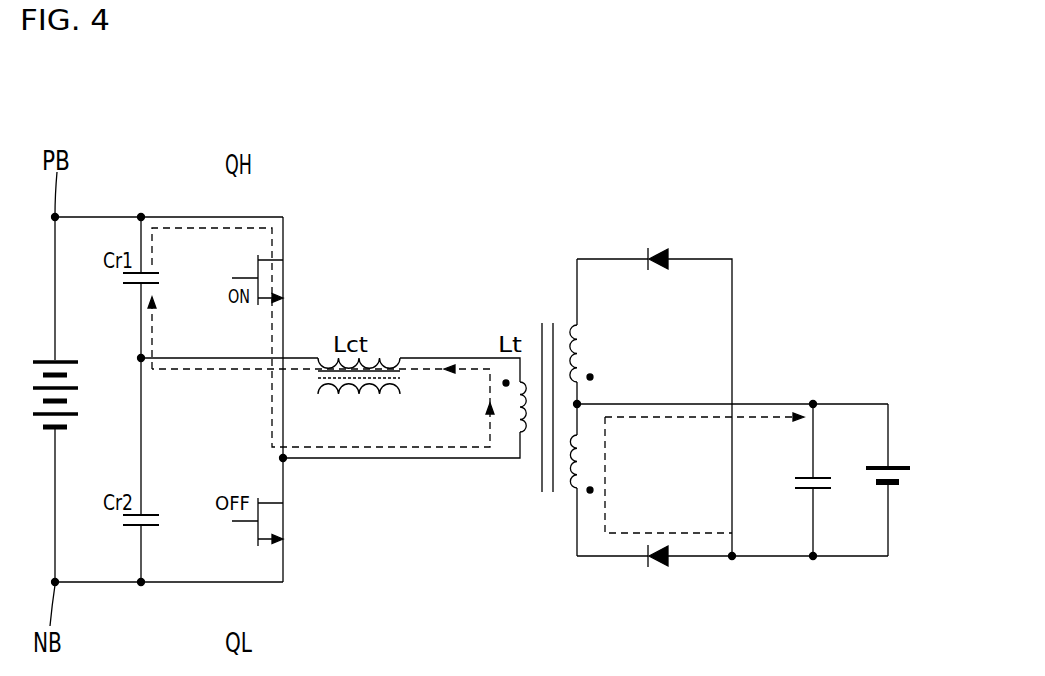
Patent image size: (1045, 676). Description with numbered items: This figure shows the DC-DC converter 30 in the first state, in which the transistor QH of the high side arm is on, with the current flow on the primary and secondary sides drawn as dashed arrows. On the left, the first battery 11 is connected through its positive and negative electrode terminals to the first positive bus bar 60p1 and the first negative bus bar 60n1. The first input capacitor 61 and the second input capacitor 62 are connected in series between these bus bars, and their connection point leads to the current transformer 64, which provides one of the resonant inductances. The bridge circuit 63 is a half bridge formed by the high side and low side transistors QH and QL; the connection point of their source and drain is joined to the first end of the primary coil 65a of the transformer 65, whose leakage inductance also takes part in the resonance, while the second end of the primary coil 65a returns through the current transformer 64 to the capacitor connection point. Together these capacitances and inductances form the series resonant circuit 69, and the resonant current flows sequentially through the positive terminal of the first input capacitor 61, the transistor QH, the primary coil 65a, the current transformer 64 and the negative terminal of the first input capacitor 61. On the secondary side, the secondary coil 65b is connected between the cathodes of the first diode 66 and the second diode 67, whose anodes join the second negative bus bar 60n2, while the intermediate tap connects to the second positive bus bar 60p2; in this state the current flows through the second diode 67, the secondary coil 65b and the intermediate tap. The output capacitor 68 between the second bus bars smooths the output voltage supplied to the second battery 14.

The first battery 11 is at (46, 360).
The second battery 14 is at (898, 466).
The DC-DC converter 30 is at (743, 144).
The first input capacitor 61 is at (158, 272).
The second input capacitor 62 is at (150, 527).
The bridge circuit 63 is at (282, 330).
The current transformer 64 is at (384, 357).
The transformer 65 is at (536, 292).
The primary coil 65a is at (527, 440).
The secondary coil 65b is at (574, 493).
The first diode 66 is at (659, 251).
The second diode 67 is at (658, 562).
The output capacitor 68 is at (810, 490).
The series resonant circuit 69 is at (386, 458).
The first positive bus bar 60p1 is at (93, 217).
The first negative bus bar 60n1 is at (105, 582).
The second positive bus bar 60p2 is at (845, 404).
The second negative bus bar 60n2 is at (848, 557).